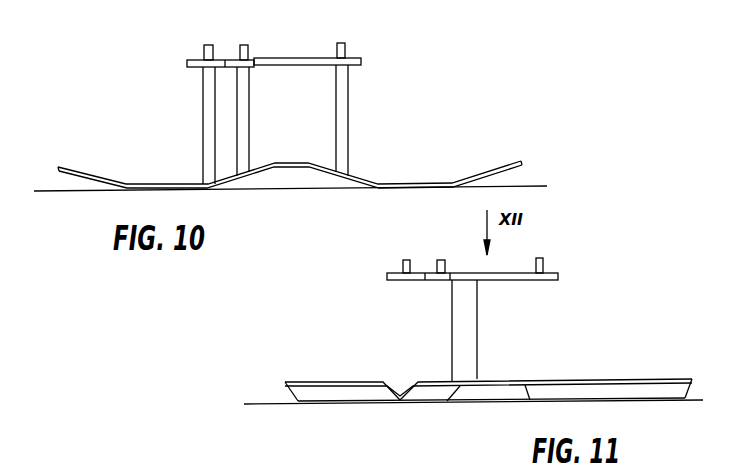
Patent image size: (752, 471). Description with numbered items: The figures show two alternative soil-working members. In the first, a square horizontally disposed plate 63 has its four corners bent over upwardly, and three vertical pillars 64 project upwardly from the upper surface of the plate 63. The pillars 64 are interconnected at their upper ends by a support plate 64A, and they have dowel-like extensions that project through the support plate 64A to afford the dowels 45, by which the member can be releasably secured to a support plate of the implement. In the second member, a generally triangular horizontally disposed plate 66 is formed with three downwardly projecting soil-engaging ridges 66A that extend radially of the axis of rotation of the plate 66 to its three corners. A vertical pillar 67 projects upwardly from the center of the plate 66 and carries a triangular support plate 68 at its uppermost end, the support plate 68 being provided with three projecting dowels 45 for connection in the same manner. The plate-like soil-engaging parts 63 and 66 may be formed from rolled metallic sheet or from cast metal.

In FIG. 10, the dowels 45 is at (337, 45).
In FIG. 11, the dowels 45 is at (442, 258).
In FIG. 10, the square horizontally disposed plate 63 is at (436, 160).
In FIG. 10, the vertical pillars 64 is at (337, 126).
In FIG. 10, the support plate 64A is at (315, 66).
In FIG. 11, the triangular horizontally disposed plate 66 is at (507, 380).
In FIG. 11, the soil-engaging ridges 66A is at (350, 372).
In FIG. 11, the vertical pillar 67 is at (465, 323).
In FIG. 11, the triangular support plate 68 is at (527, 280).